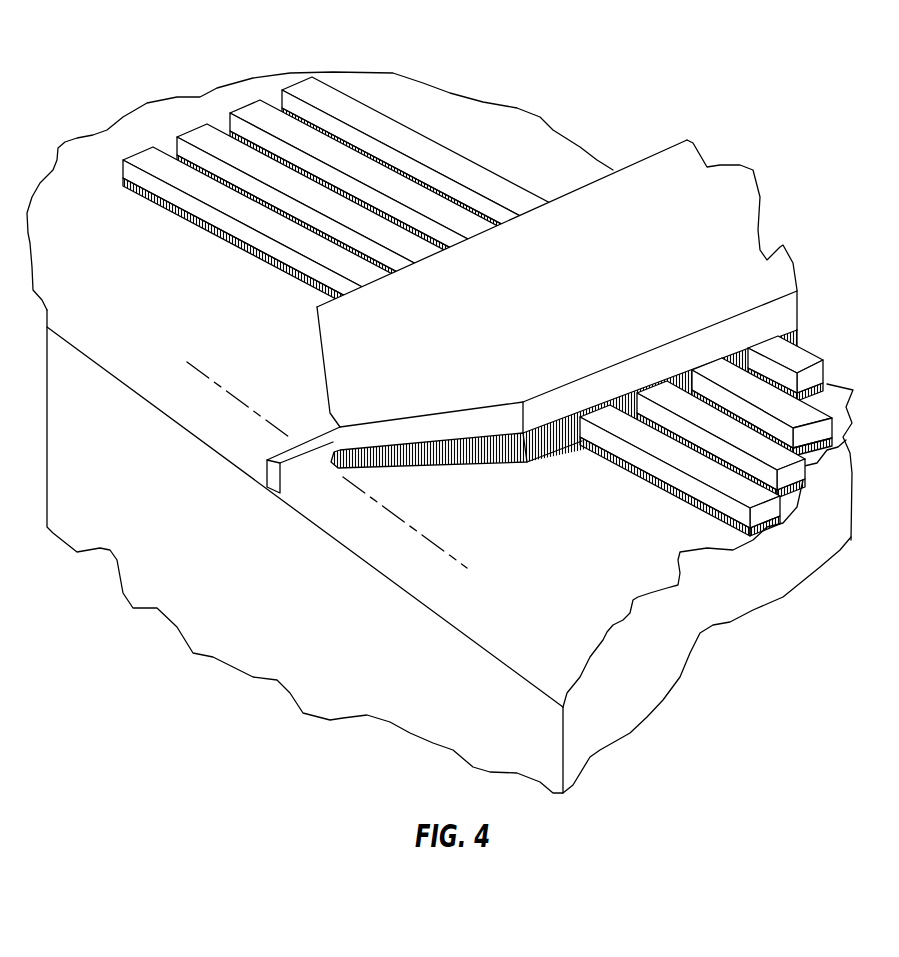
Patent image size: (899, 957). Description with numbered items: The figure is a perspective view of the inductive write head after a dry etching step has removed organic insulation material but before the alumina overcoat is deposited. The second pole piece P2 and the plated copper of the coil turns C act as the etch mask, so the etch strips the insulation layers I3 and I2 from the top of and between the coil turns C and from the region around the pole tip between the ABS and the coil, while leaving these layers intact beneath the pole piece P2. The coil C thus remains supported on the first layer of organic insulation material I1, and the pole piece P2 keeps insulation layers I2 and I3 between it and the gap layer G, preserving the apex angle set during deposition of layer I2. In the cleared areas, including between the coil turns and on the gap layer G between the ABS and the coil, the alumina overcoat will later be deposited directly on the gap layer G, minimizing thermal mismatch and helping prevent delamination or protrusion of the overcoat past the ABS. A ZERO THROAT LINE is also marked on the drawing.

The coil C is at (356, 168).
The gap layer G is at (62, 172).
The second pole piece P2 is at (552, 296).
The first layer of organic insulation material I1 is at (733, 530).
The second organic insulation layer I2 is at (514, 588).
The third organic insulation layer I3 is at (800, 327).
The air bearing surface ABS is at (320, 647).
The zero throat line ZERO THROAT LINE is at (261, 551).